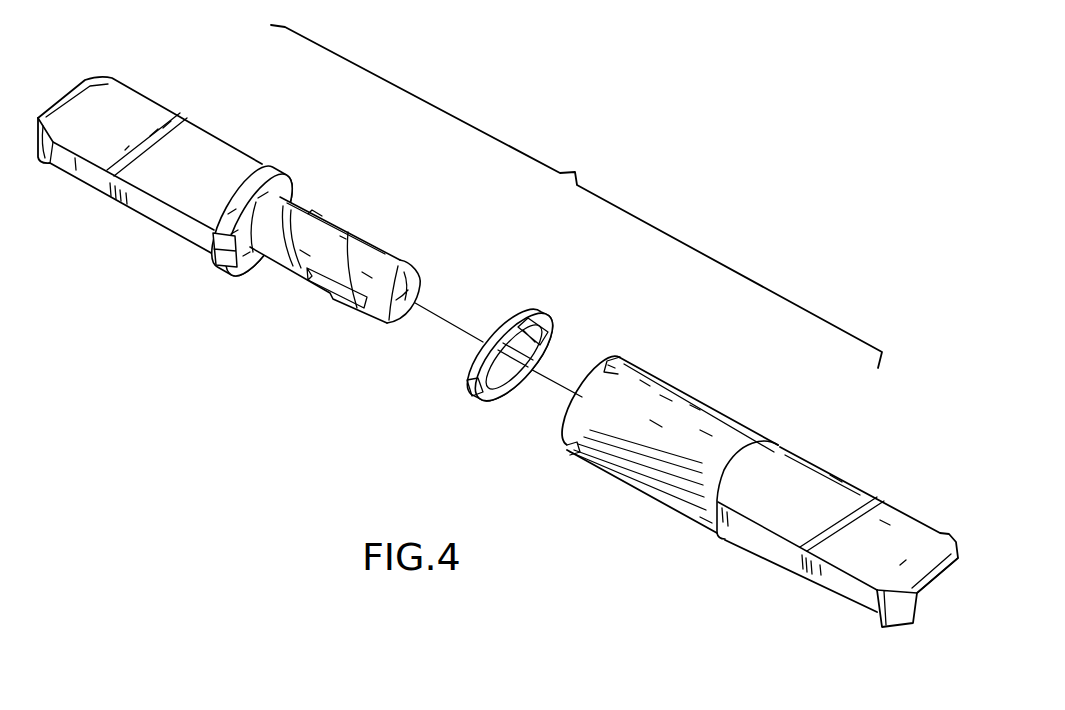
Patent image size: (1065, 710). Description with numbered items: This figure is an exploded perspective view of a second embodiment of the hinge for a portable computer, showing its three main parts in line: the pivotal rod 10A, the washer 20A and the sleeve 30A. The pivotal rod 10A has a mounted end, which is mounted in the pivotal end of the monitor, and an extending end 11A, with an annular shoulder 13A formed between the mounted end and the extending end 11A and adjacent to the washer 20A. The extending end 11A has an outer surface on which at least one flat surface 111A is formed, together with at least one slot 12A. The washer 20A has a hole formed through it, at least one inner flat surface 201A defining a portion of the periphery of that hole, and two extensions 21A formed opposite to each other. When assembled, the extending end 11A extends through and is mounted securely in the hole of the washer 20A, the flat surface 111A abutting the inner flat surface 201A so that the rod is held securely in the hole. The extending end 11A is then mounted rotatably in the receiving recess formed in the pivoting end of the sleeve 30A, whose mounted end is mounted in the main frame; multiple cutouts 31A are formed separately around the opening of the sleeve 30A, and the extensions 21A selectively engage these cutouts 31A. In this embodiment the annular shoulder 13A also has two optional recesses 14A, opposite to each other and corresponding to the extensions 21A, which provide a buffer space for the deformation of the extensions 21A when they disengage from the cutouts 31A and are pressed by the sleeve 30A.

The pivotal rod 10A is at (167, 155).
The extending end 11A is at (366, 284).
The flat surface 111A is at (357, 253).
The slot 12A is at (357, 310).
The annular shoulder 13A is at (261, 170).
The recesses 14A is at (222, 262).
The washer 20A is at (518, 341).
The inner flat surface 201A is at (476, 398).
The extensions 21A is at (554, 336).
The sleeve 30A is at (760, 477).
The cutouts 31A is at (605, 365).